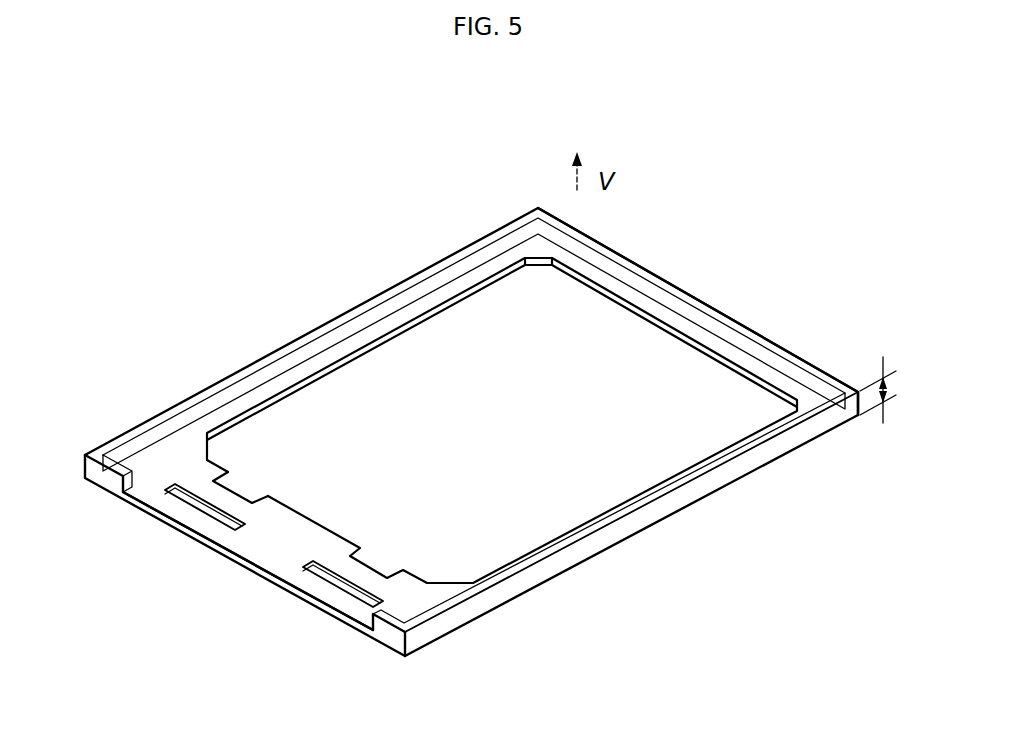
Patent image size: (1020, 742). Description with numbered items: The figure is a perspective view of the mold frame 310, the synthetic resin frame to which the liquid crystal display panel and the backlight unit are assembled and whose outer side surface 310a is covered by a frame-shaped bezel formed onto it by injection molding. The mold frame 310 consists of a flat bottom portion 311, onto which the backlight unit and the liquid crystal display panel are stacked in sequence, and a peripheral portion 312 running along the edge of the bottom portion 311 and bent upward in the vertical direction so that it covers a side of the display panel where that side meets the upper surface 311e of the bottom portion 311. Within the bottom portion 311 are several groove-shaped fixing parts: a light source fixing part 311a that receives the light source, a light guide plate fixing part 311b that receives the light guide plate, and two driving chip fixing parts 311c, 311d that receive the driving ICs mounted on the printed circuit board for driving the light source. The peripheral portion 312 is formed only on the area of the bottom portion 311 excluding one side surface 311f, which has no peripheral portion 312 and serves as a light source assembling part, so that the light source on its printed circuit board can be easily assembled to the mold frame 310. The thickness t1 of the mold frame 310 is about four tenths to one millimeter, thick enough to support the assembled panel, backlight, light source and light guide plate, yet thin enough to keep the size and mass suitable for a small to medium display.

The mold frame 310 is at (176, 252).
The outer side surface 310a is at (698, 300).
The peripheral portion 312 is at (427, 271).
The bottom portion 311 is at (298, 523).
The light source fixing part 311a is at (250, 481).
The light guide plate fixing part 311b is at (410, 373).
The driving chip fixing part 311c is at (183, 500).
The driving chip fixing part 311d is at (335, 580).
The upper surface 311e is at (343, 605).
The side surface 311f is at (222, 550).
The thickness t1 is at (890, 390).